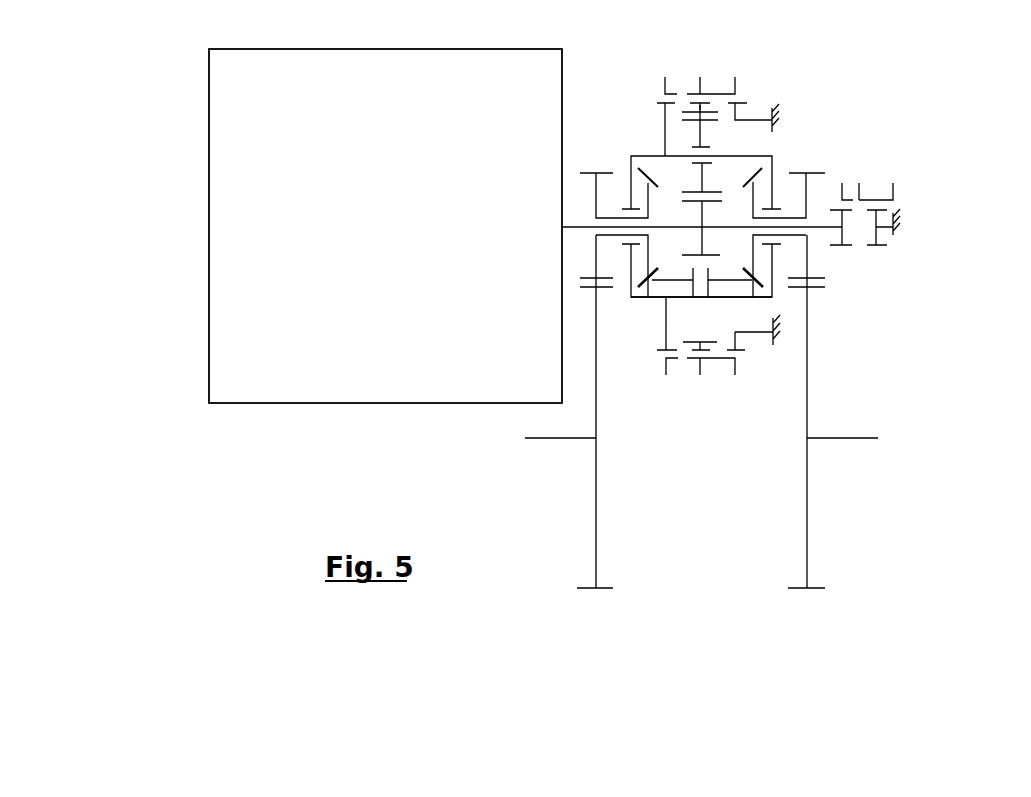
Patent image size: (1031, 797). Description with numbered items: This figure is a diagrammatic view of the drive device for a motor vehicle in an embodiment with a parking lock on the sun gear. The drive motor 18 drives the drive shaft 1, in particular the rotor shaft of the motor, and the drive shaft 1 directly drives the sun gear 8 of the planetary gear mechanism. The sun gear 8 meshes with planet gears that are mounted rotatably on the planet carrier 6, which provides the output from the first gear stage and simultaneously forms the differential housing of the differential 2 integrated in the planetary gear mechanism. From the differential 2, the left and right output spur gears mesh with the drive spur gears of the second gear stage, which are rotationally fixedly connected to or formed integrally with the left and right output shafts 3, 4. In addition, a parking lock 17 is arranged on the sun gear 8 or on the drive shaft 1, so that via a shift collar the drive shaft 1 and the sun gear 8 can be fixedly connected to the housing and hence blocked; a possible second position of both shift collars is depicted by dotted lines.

The drive shaft 1 is at (568, 224).
The differential 2 is at (775, 300).
The left output shaft 3 is at (545, 442).
The right output shaft 4 is at (848, 442).
The planet carrier 6 is at (643, 153).
The sun gear 8 is at (702, 211).
The parking lock 17 is at (857, 246).
The drive motor 18 is at (385, 226).